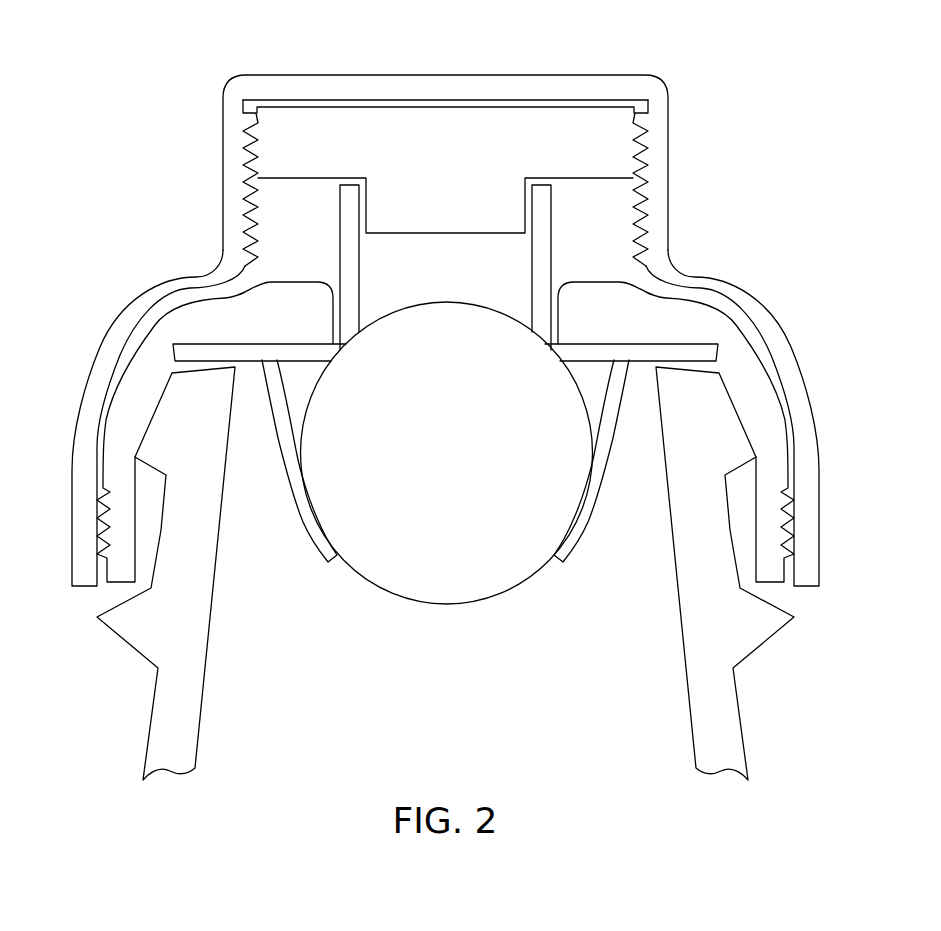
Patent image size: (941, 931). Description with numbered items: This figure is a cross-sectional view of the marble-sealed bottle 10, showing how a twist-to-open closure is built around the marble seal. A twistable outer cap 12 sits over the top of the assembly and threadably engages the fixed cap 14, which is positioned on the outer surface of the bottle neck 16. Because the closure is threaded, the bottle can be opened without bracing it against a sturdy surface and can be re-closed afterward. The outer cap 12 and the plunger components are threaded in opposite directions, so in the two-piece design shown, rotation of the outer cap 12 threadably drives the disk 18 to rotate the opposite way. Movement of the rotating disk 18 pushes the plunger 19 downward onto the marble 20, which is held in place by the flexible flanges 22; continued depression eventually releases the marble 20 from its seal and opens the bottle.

The marble-sealed bottle 10 is at (772, 180).
The twistable outer cap 12 is at (777, 348).
The fixed cap 14 is at (773, 468).
The bottle neck 16 is at (717, 727).
The disk 18 is at (453, 155).
The plunger 19 is at (347, 242).
The marble 20 is at (443, 480).
The flexible flanges 22 is at (585, 512).